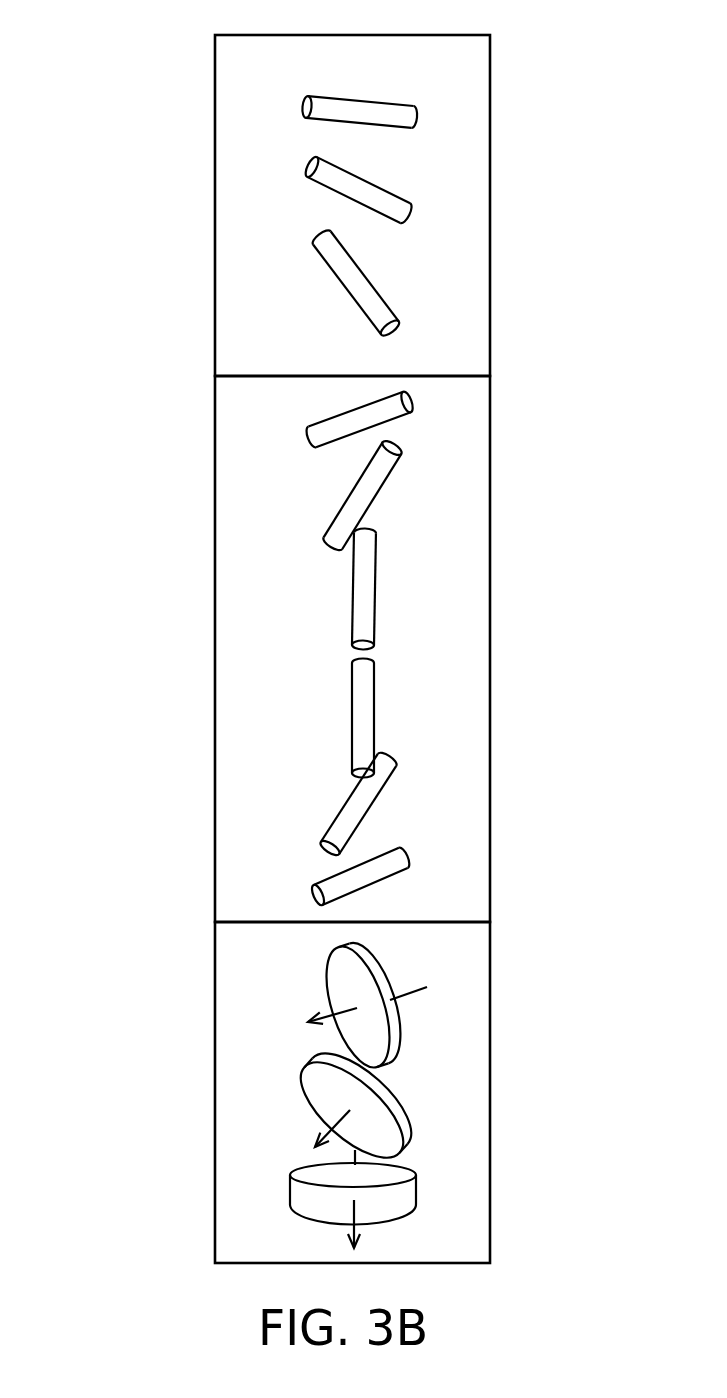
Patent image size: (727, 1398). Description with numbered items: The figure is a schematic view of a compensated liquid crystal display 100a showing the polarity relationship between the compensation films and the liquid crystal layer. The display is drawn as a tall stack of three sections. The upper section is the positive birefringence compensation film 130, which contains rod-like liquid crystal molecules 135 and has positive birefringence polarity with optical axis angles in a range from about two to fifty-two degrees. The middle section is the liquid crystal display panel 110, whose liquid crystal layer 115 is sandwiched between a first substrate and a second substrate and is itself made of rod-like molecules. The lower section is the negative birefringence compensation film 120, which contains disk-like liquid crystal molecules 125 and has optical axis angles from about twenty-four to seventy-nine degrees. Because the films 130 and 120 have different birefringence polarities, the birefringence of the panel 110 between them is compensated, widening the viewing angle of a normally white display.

The liquid crystal display 100a is at (332, 633).
The positive birefringence compensation film 130 is at (347, 205).
The rod-like liquid crystal molecules 135 is at (372, 303).
The liquid crystal display panel 110 is at (348, 649).
The liquid crystal layer 115 is at (363, 728).
The negative birefringence compensation film 120 is at (348, 1092).
The disk-like liquid crystal molecules 125 is at (390, 1210).